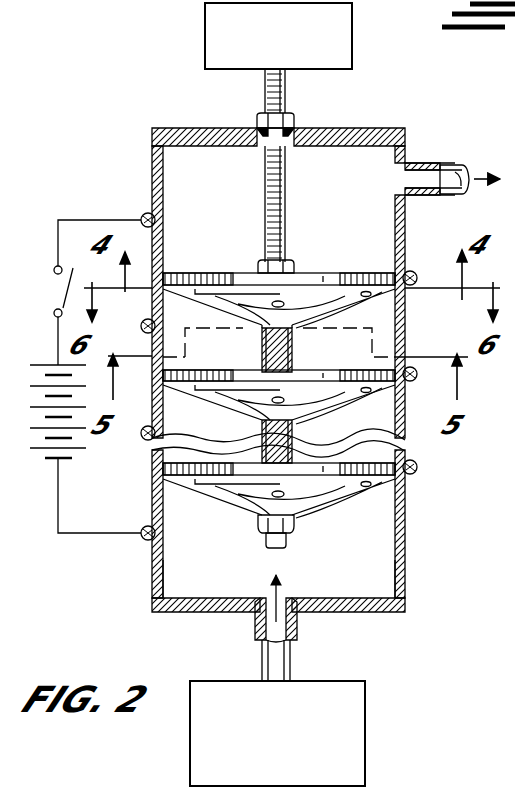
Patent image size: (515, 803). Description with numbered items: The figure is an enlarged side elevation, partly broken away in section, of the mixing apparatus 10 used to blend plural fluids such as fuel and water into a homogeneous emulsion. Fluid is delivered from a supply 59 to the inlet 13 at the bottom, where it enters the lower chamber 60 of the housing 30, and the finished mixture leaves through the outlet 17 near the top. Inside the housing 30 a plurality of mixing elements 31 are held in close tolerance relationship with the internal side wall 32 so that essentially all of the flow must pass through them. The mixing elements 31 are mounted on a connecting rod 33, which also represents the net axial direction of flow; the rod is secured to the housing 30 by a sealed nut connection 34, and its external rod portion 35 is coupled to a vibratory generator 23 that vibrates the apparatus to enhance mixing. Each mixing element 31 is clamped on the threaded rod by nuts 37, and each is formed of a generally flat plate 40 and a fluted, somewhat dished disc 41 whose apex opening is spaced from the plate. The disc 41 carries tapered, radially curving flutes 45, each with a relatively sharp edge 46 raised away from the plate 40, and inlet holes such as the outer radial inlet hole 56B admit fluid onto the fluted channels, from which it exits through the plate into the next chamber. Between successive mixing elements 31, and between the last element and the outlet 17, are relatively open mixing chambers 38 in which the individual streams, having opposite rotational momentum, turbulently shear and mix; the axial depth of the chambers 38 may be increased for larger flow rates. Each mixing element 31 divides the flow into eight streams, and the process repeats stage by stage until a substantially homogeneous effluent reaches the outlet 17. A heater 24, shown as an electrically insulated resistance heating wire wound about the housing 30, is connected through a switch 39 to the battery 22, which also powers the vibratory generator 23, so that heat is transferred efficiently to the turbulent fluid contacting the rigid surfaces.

The mixing apparatus 10 is at (407, 128).
The inlet 13 is at (292, 643).
The outlet 17 is at (447, 165).
The battery 22 is at (80, 448).
The vibratory generator 23 is at (205, 44).
The heater 24 is at (145, 211).
The housing 30 is at (405, 567).
The mixing elements 31 is at (250, 331).
The internal side wall 32 is at (395, 576).
The connecting rod 33 is at (285, 165).
The sealed nut connections 34 is at (302, 126).
The external rod portion 35 is at (285, 82).
The nuts 37 is at (262, 268).
The mixing chambers 38 is at (279, 290).
The switch 39 is at (60, 285).
The flat plate 40 is at (163, 377).
The fluted dished disc 41 is at (163, 388).
The flutes 45 is at (375, 399).
The sharp edge 46 is at (397, 388).
The outer radial inlet hole 56B is at (280, 304).
The fluid supply 59 is at (366, 699).
The lower chamber 60 is at (228, 586).